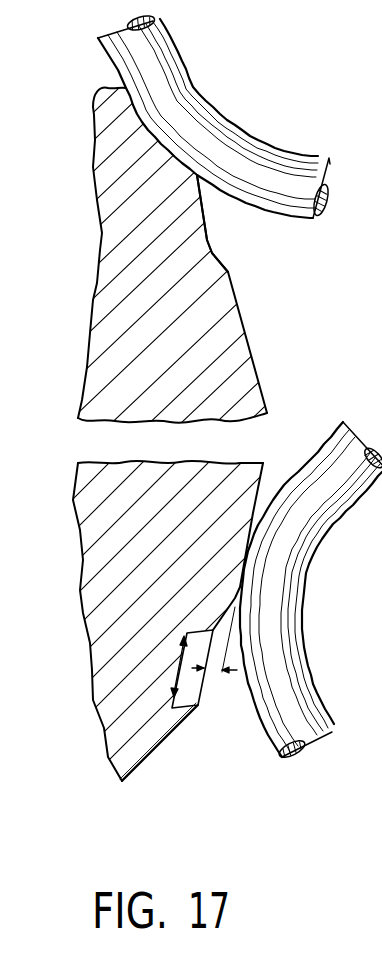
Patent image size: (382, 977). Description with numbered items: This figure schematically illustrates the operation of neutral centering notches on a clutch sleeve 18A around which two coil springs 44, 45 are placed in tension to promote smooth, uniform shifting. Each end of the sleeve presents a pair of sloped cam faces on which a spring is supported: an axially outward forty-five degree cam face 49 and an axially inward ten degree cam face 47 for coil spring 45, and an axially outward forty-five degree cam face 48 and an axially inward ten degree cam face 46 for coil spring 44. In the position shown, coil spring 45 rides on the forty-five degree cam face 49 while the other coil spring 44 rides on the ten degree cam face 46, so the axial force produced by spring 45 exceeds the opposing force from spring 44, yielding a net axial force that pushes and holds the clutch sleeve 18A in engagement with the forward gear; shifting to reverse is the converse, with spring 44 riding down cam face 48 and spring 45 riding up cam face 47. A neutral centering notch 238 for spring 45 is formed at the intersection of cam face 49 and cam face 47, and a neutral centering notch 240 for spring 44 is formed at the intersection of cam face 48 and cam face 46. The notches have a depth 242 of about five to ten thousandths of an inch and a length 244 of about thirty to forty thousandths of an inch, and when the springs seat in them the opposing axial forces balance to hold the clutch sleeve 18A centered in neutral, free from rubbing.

The clutch sleeve 18A is at (83, 477).
The coil spring 44 is at (297, 617).
The coil spring 45 is at (208, 125).
The cam face 46 is at (265, 477).
The cam face 47 is at (247, 330).
The cam face 48 is at (148, 760).
The cam face 49 is at (95, 93).
The neutral centering notch 238 is at (212, 253).
The neutral centering notch 240 is at (200, 700).
The depth 242 is at (213, 672).
The length 244 is at (178, 667).